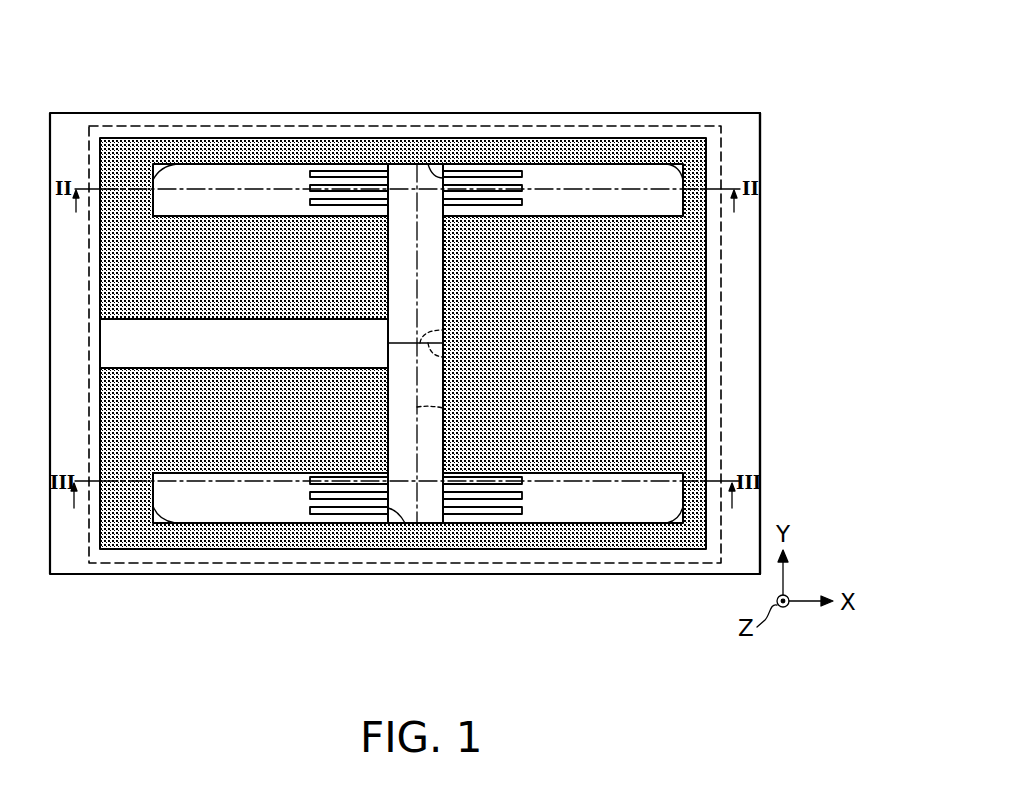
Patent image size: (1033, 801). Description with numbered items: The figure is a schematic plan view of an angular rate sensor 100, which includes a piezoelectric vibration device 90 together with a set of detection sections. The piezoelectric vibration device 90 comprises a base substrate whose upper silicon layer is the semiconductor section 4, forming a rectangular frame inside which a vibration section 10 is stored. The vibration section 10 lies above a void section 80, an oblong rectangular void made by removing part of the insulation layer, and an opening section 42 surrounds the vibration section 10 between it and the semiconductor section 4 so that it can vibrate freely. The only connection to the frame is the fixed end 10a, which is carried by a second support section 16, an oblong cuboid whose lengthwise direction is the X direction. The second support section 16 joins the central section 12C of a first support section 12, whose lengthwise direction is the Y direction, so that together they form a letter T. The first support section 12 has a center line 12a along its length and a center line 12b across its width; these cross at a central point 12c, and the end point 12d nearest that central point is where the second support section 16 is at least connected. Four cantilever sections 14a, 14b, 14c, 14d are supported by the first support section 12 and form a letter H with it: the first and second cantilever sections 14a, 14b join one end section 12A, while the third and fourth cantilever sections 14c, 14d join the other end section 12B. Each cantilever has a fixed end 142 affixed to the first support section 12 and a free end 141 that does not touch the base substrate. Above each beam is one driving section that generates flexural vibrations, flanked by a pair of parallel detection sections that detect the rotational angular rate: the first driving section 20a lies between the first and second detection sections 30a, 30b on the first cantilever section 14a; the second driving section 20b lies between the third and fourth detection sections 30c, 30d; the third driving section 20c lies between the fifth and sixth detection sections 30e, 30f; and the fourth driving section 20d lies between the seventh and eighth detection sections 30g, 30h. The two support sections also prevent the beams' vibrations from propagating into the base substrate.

The angular rate sensor 100 is at (770, 63).
The piezoelectric vibration device 90 is at (778, 344).
The void section 80 is at (118, 132).
The semiconductor section 4 is at (75, 366).
The opening section 42 is at (626, 344).
The vibration section 10 is at (321, 343).
The fixed end 10a is at (244, 343).
The second support section 16 is at (253, 354).
The first support section 12 is at (414, 343).
The one end section 12A is at (405, 178).
The other end section 12B is at (425, 518).
The central section 12C is at (405, 325).
The center line 12a is at (443, 408).
The center line 12b is at (443, 358).
The central point 12c is at (443, 333).
The end point 12d is at (388, 343).
The first cantilever section 14a is at (220, 178).
The second cantilever section 14b is at (610, 178).
The third cantilever section 14c is at (610, 508).
The fourth cantilever section 14d is at (223, 508).
The free end 141 is at (177, 164).
The fixed end 142 is at (428, 164).
The first driving section 20a is at (334, 112).
The second driving section 20b is at (493, 113).
The third driving section 20c is at (494, 563).
The fourth driving section 20d is at (343, 563).
The first detection section 30a is at (380, 172).
The second detection section 30b is at (312, 203).
The third detection section 30c is at (452, 172).
The fourth detection section 30d is at (528, 207).
The fifth detection section 30e is at (453, 514).
The sixth detection section 30f is at (520, 478).
The seventh detection section 30g is at (342, 500).
The eighth detection section 30h is at (308, 477).